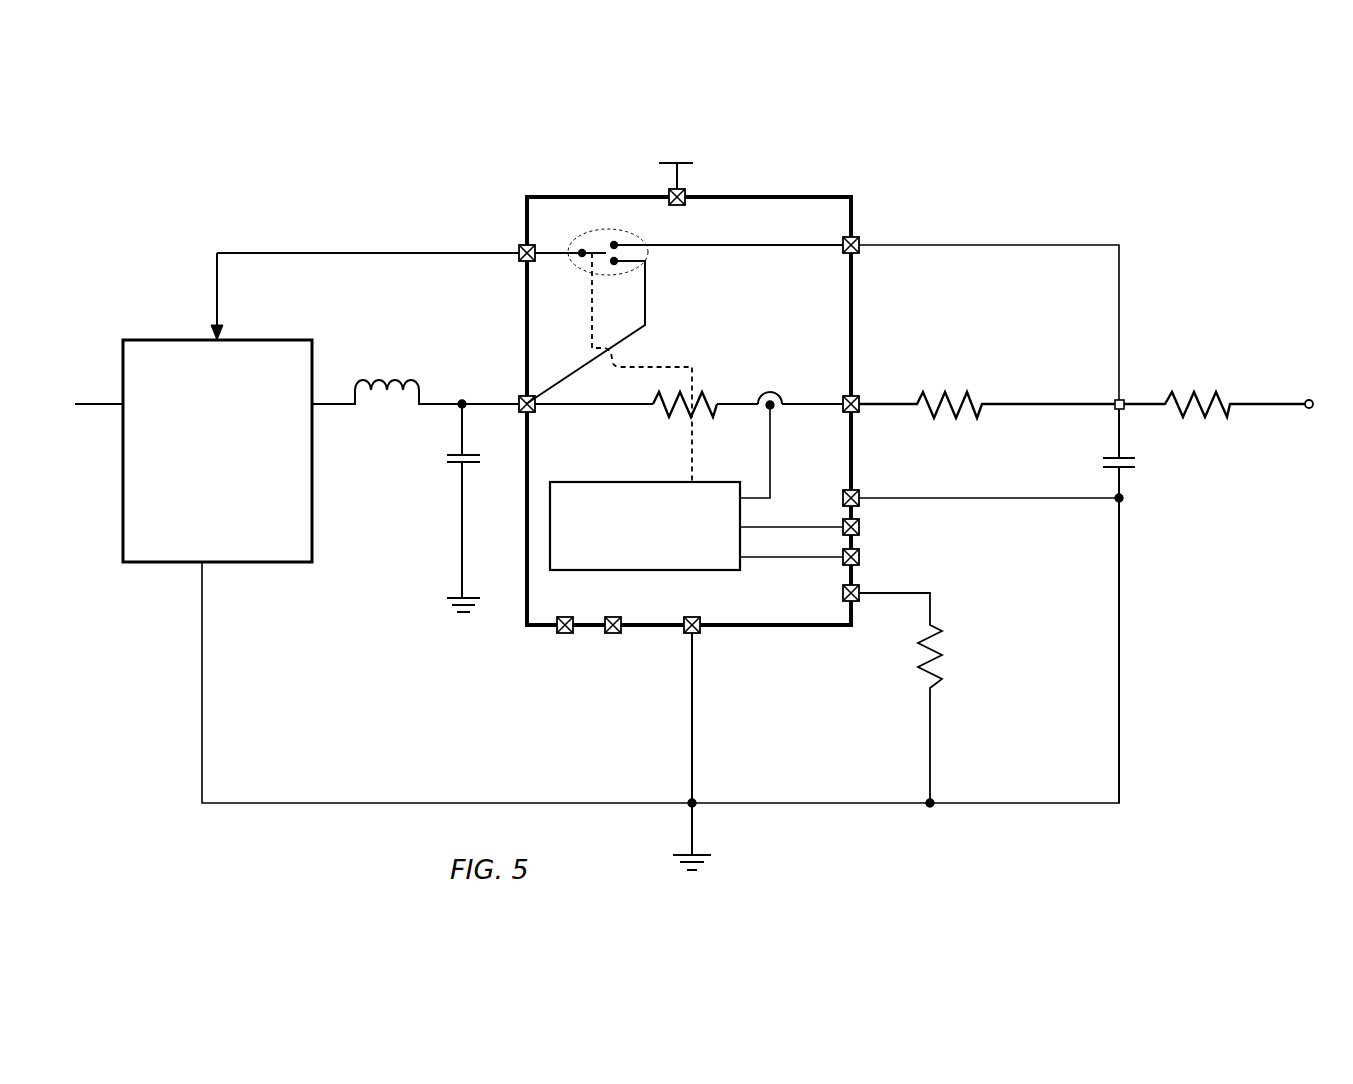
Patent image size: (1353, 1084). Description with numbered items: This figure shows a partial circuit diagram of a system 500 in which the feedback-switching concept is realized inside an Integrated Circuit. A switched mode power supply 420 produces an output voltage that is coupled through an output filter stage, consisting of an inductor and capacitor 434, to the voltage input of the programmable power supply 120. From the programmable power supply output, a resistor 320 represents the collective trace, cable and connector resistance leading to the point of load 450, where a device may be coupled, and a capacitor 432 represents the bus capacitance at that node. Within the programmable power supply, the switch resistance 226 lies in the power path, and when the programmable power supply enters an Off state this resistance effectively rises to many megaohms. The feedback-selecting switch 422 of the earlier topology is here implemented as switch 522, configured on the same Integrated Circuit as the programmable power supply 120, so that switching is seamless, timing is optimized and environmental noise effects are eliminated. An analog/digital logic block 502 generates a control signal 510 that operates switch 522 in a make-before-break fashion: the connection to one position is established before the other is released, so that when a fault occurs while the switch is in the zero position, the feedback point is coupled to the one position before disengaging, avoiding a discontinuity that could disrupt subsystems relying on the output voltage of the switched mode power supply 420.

The system 500 is at (215, 163).
The SMPS 420 is at (411, 384).
The PPS 120 is at (557, 388).
The analog/digital logic block 502 is at (645, 526).
The control signal 510 is at (645, 368).
The switch 522 is at (648, 254).
The RSW 226 is at (662, 407).
The resistor 320 is at (956, 418).
The switch 422 is at (1205, 417).
The capacitor 432 is at (1123, 470).
The capacitor 434 is at (455, 467).
The POL 450 is at (1123, 400).